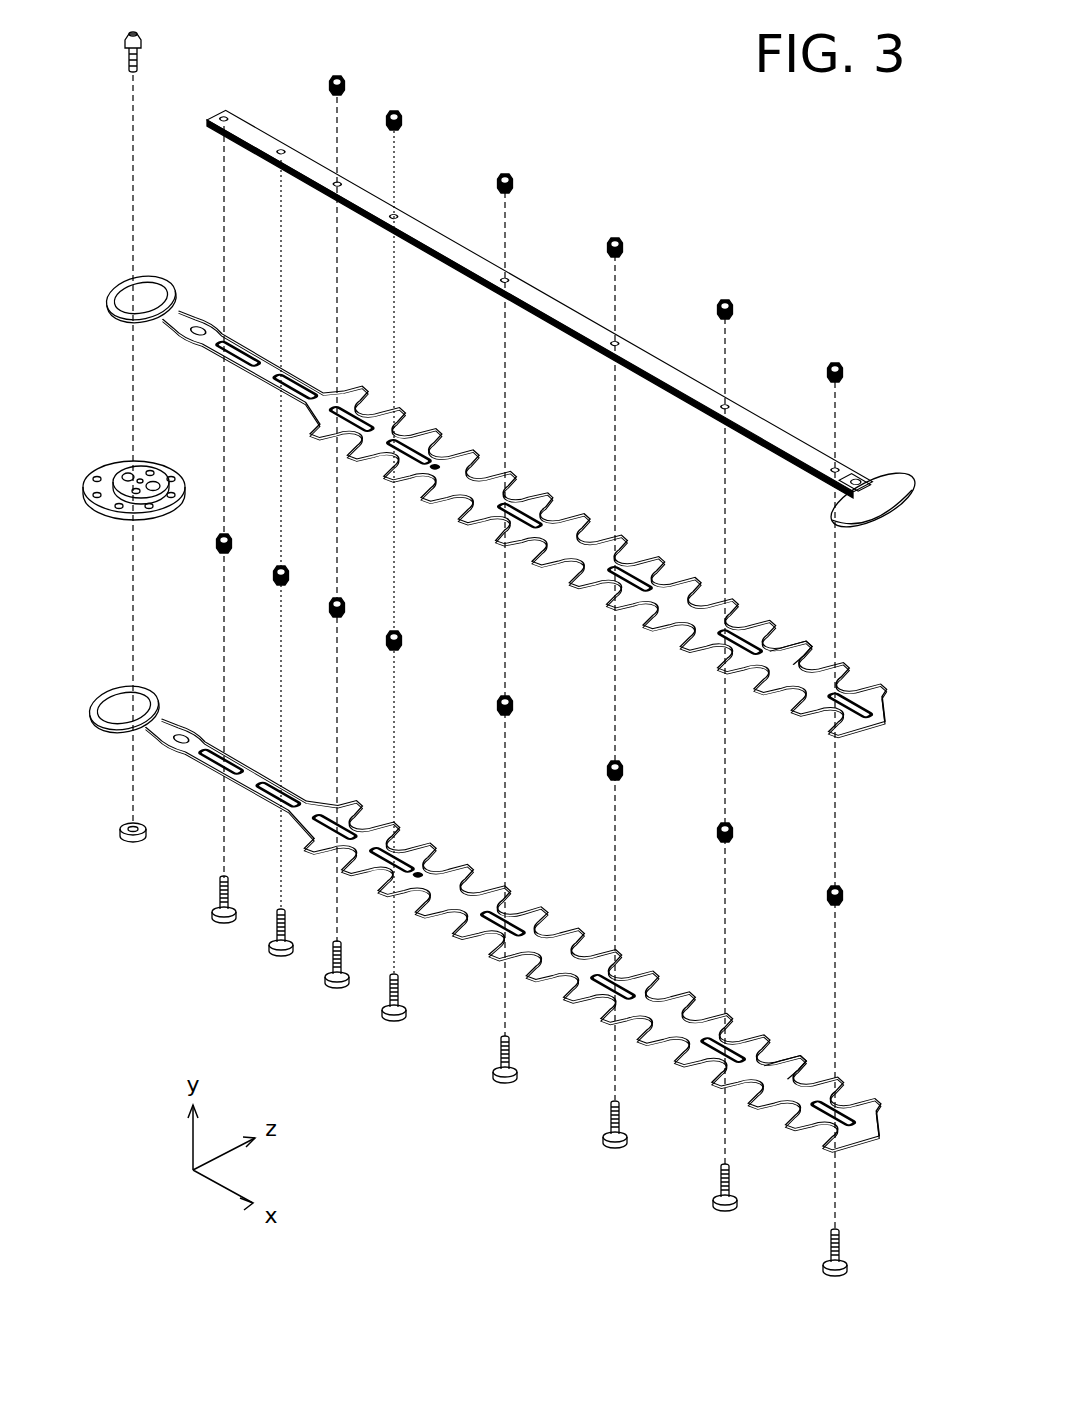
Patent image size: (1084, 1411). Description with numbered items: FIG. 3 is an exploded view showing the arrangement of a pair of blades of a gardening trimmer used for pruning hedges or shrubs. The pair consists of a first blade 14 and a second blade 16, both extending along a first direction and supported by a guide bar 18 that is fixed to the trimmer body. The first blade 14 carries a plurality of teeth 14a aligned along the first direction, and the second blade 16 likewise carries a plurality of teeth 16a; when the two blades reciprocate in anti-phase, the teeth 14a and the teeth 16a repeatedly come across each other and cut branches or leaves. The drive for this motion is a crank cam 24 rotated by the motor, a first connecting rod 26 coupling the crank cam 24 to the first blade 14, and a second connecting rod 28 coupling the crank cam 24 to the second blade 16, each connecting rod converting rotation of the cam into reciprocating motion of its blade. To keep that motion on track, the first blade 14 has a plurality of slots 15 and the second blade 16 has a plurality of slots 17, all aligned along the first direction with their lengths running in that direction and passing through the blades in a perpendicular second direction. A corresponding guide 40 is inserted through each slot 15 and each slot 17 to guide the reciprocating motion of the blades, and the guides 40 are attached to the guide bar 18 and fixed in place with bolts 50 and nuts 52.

The first blade 14 is at (509, 472).
The teeth 14a is at (818, 648).
The slots 15 is at (733, 640).
The second blade 16 is at (498, 886).
The teeth 16a is at (818, 1058).
The slots 17 is at (700, 1036).
The guide bar 18 is at (252, 118).
The crank cam 24 is at (125, 457).
The first connecting rod 26 is at (152, 275).
The second connecting rod 28 is at (146, 685).
The guide 40 is at (744, 832).
The bolts 50 is at (712, 1202).
The nuts 52 is at (741, 309).